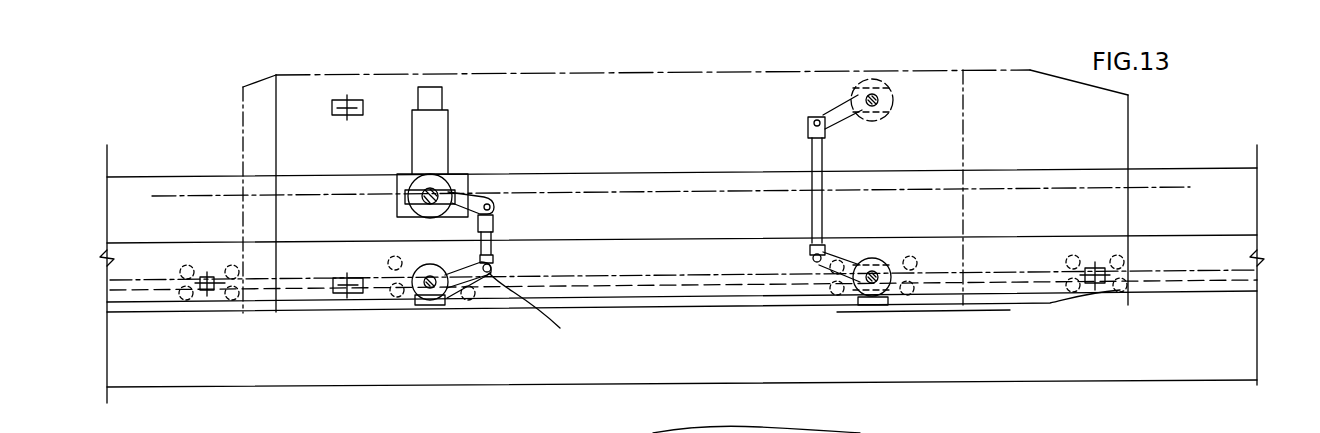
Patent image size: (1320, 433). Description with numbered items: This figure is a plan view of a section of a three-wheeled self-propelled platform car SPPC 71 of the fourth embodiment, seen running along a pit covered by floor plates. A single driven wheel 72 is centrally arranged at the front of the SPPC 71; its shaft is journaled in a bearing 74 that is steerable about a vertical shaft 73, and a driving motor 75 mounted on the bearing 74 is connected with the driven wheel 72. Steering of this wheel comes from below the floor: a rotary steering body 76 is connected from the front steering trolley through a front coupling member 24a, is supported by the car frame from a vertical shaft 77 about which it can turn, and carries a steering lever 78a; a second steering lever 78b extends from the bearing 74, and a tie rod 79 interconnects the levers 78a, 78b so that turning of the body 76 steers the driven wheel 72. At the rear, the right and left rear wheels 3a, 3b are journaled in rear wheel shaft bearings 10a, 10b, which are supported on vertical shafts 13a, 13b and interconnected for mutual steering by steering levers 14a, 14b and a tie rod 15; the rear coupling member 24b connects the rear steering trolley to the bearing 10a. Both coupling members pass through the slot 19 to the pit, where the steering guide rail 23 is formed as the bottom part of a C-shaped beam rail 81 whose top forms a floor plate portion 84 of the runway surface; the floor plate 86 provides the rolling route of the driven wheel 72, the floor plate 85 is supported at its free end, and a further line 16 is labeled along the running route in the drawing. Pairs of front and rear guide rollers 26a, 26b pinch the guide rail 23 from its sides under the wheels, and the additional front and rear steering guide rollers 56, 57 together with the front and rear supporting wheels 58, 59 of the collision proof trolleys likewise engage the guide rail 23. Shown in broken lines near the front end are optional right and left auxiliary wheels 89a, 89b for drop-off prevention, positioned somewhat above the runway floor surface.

The three-wheeled SPPC 71 is at (533, 64).
The C-shaped beam rail 81 is at (150, 273).
The floor plate portion 84 is at (671, 213).
The floor plate 86 is at (186, 190).
The floor plate 85 is at (233, 355).
The rail 16 is at (647, 296).
The slot 19 is at (677, 303).
The steering guide rail 23 is at (742, 280).
The auxiliary wheel 89a is at (332, 298).
The auxiliary wheel 89b is at (338, 96).
The driving motor 75 is at (440, 135).
The bearing 74 is at (405, 174).
The driven wheel 72 is at (400, 200).
The vertical shaft 73 is at (440, 188).
The steering lever 78b is at (480, 197).
The tie rod 79 is at (495, 250).
The vertical shaft 77 is at (439, 300).
The steering lever 78a is at (551, 310).
The front coupling member 24a is at (428, 302).
The rotary steering body 76 is at (418, 290).
The front guide rollers 26a is at (495, 226).
The front steering guide rollers 56 is at (183, 276).
The front supporting wheel 58 is at (205, 296).
The rear steering guide rollers 57 is at (1113, 256).
The rear supporting wheel 59 is at (1100, 290).
The tie rod 15 is at (815, 205).
The steering lever 14b is at (835, 115).
The rear wheel 3b is at (893, 95).
The vertical shaft 13b is at (858, 118).
The rear wheel shaft bearing 10b is at (880, 122).
The steering lever 14a is at (817, 268).
The rear wheel 3a is at (870, 305).
The vertical shaft 13a is at (895, 262).
The rear wheel shaft bearing 10a is at (892, 258).
The rear coupling member 24b is at (890, 307).
The rear guide rollers 26b is at (850, 237).